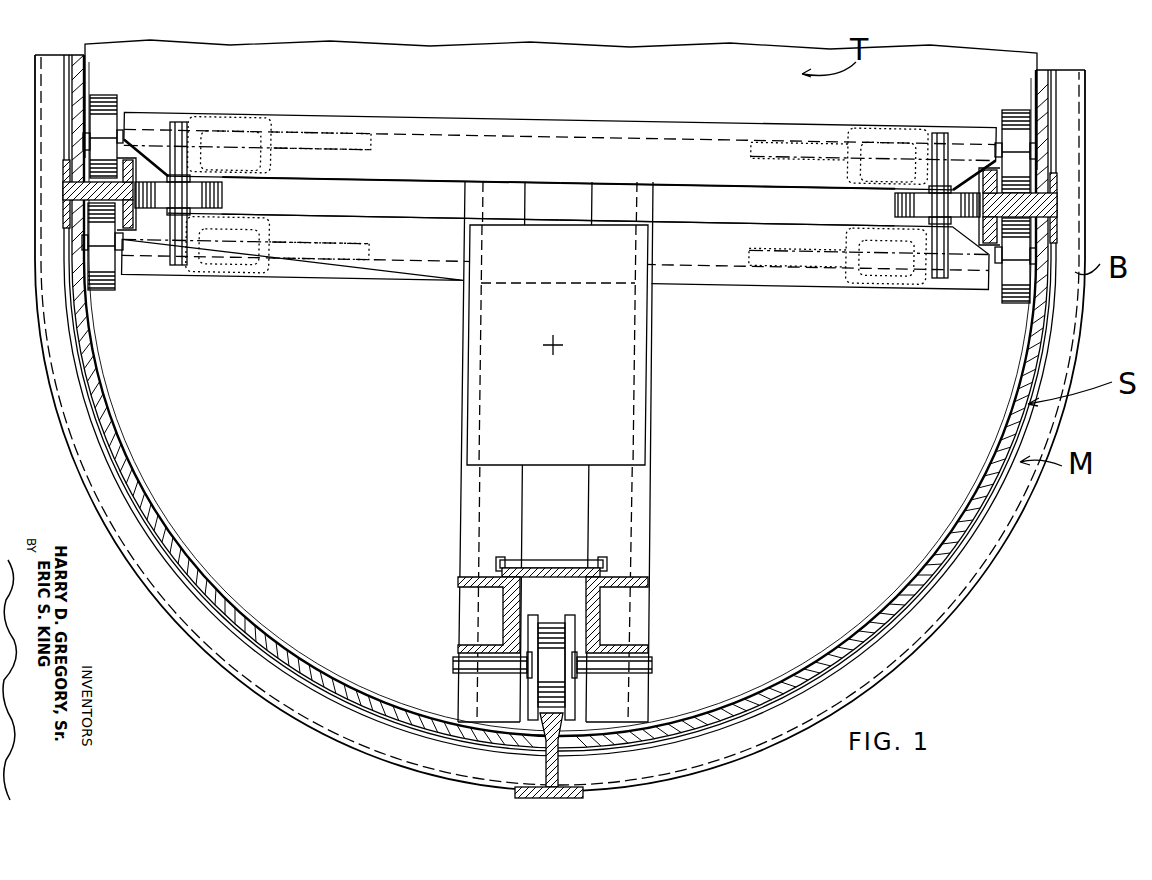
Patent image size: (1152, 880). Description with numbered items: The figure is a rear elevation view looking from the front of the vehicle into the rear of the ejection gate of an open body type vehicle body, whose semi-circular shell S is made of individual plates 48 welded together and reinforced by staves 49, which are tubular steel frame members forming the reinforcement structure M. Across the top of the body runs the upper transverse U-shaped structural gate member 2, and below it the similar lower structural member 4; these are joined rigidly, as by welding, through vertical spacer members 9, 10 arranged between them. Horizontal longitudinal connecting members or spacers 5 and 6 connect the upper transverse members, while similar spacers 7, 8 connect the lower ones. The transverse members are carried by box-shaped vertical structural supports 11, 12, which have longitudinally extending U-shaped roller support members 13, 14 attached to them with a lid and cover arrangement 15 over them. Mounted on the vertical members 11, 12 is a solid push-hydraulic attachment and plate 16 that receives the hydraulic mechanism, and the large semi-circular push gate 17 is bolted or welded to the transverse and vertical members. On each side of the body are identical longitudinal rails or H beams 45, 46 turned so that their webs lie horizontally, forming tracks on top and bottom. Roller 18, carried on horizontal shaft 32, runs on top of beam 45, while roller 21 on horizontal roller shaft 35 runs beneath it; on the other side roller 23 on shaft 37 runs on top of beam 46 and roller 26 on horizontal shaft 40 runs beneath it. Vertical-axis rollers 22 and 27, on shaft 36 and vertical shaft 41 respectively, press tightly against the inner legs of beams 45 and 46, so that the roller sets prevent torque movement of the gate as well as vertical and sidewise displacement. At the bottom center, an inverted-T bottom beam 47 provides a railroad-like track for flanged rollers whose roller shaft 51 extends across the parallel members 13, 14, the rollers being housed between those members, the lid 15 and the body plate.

The upper transverse U-shaped structural gate member 2 is at (530, 134).
The lower structural member 4 is at (692, 280).
The longitudinal connecting member 5 is at (240, 130).
The longitudinal connecting member 6 is at (890, 130).
The spacer 7 is at (222, 274).
The spacer 8 is at (897, 280).
The spacer member 9 is at (484, 198).
The spacer member 10 is at (646, 198).
The vertical structural support 11 is at (480, 521).
The vertical structural support 12 is at (625, 521).
The U-shaped roller support member 13 is at (497, 600).
The U-shaped roller support member 14 is at (606, 601).
The lid and cover arrangement 15 is at (498, 568).
The push-hydraulic attachment and plate 16 is at (622, 384).
The push gate 17 is at (997, 68).
The roller 18 is at (120, 99).
The roller member 21 is at (108, 292).
The roller 22 is at (222, 194).
The roller 23 is at (1003, 117).
The roller member 26 is at (1016, 304).
The roller 27 is at (895, 205).
The horizontal shaft 32 is at (325, 140).
The horizontal roller shaft 35 is at (305, 261).
The shaft 36 is at (178, 265).
The shaft 37 is at (795, 150).
The horizontal shaft 40 is at (822, 258).
The vertical shaft 41 is at (952, 272).
The longitudinal rail or H beam 45 is at (63, 193).
The longitudinal rail or H beam 46 is at (1057, 217).
The bottom beam 47 is at (585, 794).
The plate 48 is at (913, 605).
The stave 49 is at (945, 592).
The roller shaft 51 is at (462, 667).